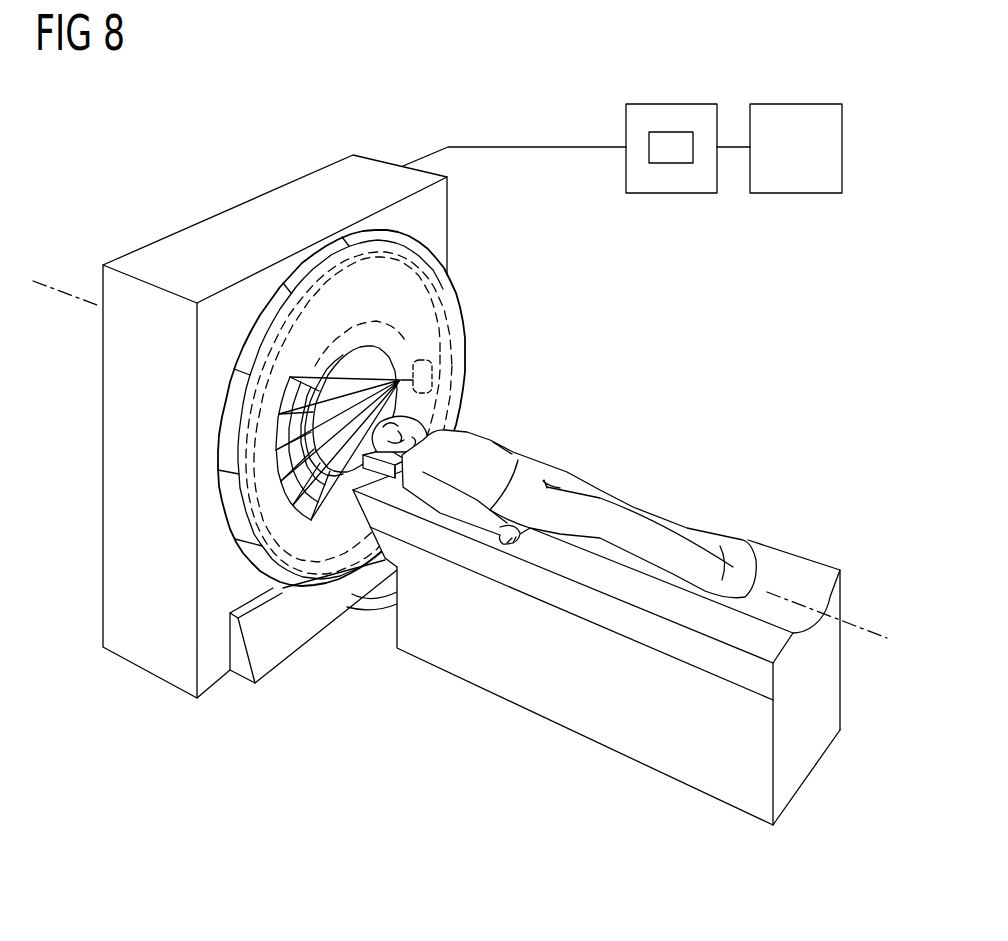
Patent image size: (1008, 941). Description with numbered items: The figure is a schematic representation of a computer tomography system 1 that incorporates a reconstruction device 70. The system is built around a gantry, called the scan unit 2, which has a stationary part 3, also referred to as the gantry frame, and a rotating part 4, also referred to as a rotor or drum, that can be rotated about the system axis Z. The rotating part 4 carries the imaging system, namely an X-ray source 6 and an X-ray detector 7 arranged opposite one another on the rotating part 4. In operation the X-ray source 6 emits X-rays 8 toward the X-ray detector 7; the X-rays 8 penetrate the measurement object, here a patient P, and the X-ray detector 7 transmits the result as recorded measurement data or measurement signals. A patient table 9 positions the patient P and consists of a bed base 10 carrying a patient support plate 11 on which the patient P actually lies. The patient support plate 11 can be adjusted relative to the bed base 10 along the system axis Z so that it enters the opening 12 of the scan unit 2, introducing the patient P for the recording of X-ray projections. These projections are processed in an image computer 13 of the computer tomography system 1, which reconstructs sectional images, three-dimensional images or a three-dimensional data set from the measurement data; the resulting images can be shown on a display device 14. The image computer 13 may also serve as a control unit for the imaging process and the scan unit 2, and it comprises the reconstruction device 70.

The computer tomography system 1 is at (704, 347).
The scan unit 2 is at (270, 203).
The stationary part 3 is at (449, 219).
The rotating part 4 is at (465, 340).
The X-ray source 6 is at (423, 360).
The X-ray detector 7 is at (286, 572).
The X-rays 8 is at (387, 360).
The patient table 9 is at (797, 568).
The bed base 10 is at (540, 706).
The patient support plate 11 is at (761, 556).
The opening 12 is at (347, 370).
The image computer 13 is at (670, 104).
The display device 14 is at (795, 104).
The reconstruction device 70 is at (670, 163).
The patient P is at (598, 490).
The system axis Z is at (870, 626).